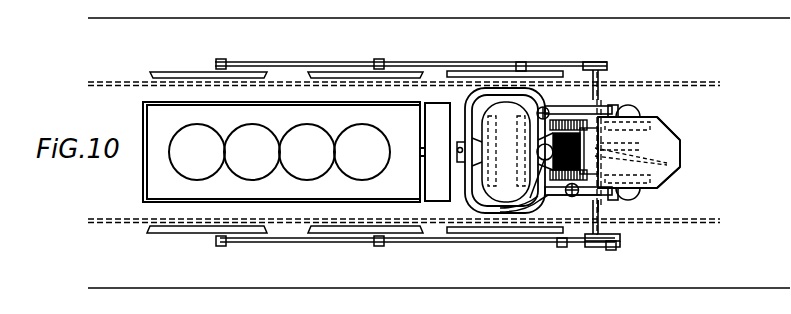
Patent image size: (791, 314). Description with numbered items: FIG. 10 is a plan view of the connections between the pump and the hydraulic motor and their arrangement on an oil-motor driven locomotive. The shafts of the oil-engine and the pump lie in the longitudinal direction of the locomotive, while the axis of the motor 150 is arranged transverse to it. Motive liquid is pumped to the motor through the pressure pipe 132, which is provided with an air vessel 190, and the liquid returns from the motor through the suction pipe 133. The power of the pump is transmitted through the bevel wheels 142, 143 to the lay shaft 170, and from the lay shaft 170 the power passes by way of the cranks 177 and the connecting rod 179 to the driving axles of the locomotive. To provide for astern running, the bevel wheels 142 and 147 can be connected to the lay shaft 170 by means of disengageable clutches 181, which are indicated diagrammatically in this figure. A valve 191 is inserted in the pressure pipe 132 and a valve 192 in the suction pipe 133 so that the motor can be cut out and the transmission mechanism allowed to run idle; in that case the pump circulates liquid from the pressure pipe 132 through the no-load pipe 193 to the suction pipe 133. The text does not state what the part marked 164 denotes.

The pressure pipe 132 is at (541, 108).
The suction pipe 133 is at (464, 199).
The bevel wheel 142 is at (600, 110).
The bevel wheel 143 is at (602, 120).
The bevel wheel 147 is at (610, 236).
The motor 150 is at (655, 158).
The lever 164 is at (555, 186).
The lay shaft 170 is at (592, 104).
The cranks 177 is at (598, 62).
The connecting rod 179 is at (440, 226).
The disengageable clutches 181 is at (630, 145).
The air vessel 190 is at (520, 200).
The valve 191 is at (500, 62).
The valve 192 is at (572, 197).
The no-load pipe 193 is at (479, 98).